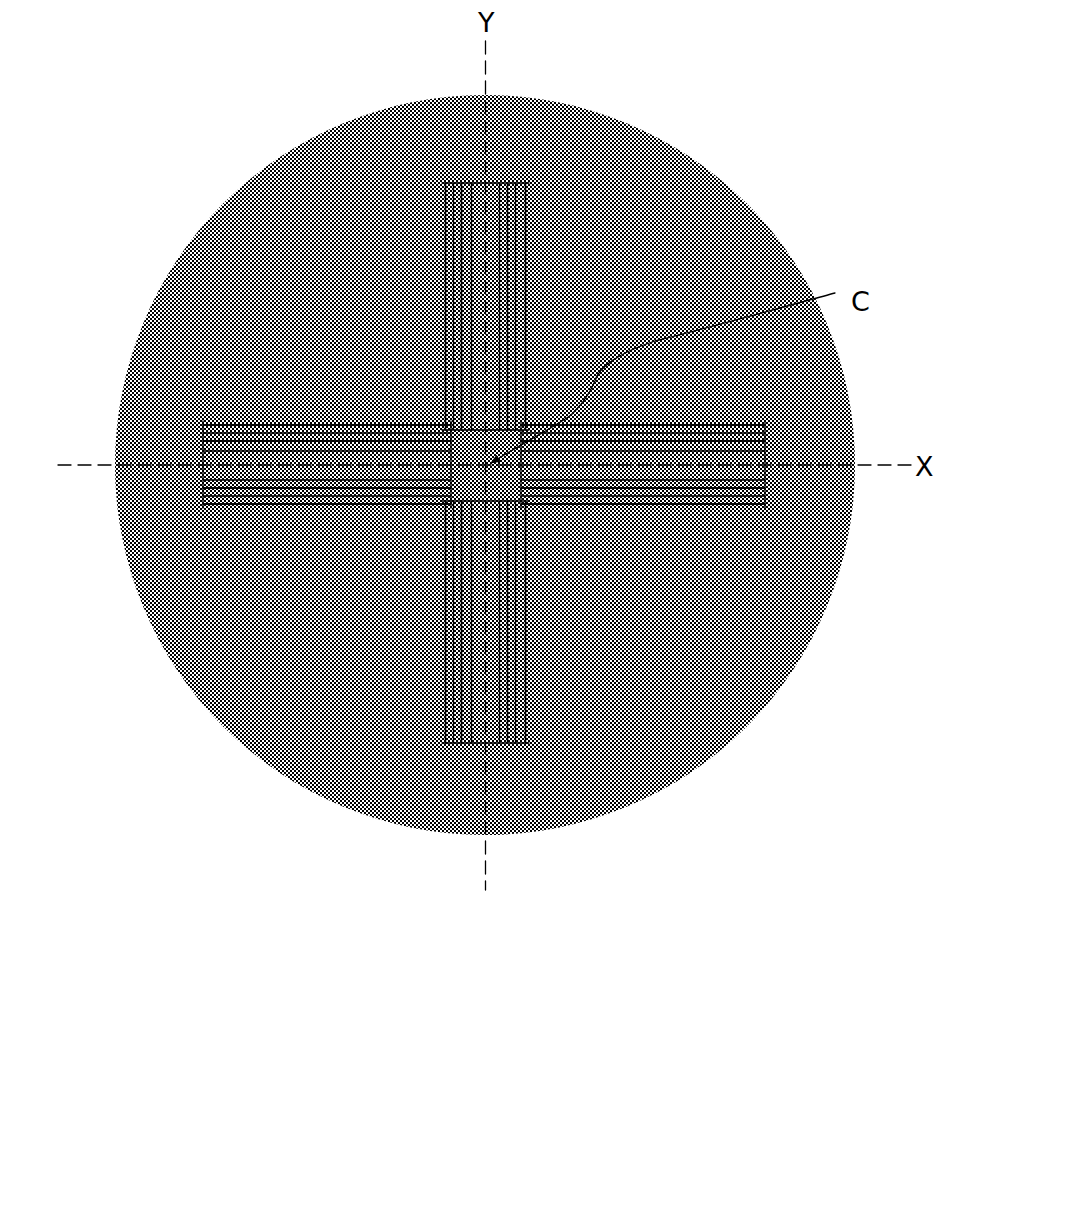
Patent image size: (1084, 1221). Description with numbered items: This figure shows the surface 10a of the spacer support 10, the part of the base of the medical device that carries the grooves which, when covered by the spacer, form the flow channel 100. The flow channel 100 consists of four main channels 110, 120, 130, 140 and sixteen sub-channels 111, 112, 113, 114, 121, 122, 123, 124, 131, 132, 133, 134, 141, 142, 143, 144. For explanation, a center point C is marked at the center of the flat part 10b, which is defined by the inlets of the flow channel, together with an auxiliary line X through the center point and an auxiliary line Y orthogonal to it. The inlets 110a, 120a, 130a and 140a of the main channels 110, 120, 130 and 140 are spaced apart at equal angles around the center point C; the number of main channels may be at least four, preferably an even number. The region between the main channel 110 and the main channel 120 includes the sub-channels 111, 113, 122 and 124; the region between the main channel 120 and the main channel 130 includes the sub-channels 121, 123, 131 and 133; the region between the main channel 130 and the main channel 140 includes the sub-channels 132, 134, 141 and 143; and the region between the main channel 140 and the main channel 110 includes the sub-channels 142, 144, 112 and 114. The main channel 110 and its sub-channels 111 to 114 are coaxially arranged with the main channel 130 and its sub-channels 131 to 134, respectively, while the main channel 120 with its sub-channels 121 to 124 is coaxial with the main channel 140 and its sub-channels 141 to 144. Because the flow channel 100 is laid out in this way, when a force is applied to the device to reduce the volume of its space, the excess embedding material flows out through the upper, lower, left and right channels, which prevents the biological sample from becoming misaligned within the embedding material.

The spacer support 10 is at (820, 162).
The surface of the spacer support 10a is at (757, 280).
The flat part 10b is at (446, 476).
The flow channel 100 is at (220, 645).
The main channel 110 is at (287, 453).
The inlet of the main channel 110a is at (440, 453).
The sub-channel 111 is at (202, 438).
The sub-channel 112 is at (202, 476).
The sub-channel 113 is at (202, 420).
The sub-channel 114 is at (202, 492).
The main channel 120 is at (485, 440).
The inlet of the main channel 120a is at (487, 440).
The sub-channel 121 is at (500, 175).
The sub-channel 122 is at (458, 175).
The sub-channel 123 is at (520, 175).
The sub-channel 124 is at (438, 175).
The main channel 130 is at (657, 458).
The inlet of the main channel 130a is at (513, 462).
The sub-channel 131 is at (760, 433).
The sub-channel 132 is at (757, 475).
The sub-channel 133 is at (757, 413).
The sub-channel 134 is at (757, 493).
The main channel 140 is at (473, 560).
The inlet of the main channel 140a is at (470, 496).
The sub-channel 141 is at (497, 735).
The sub-channel 142 is at (458, 735).
The sub-channel 143 is at (516, 735).
The sub-channel 144 is at (438, 735).